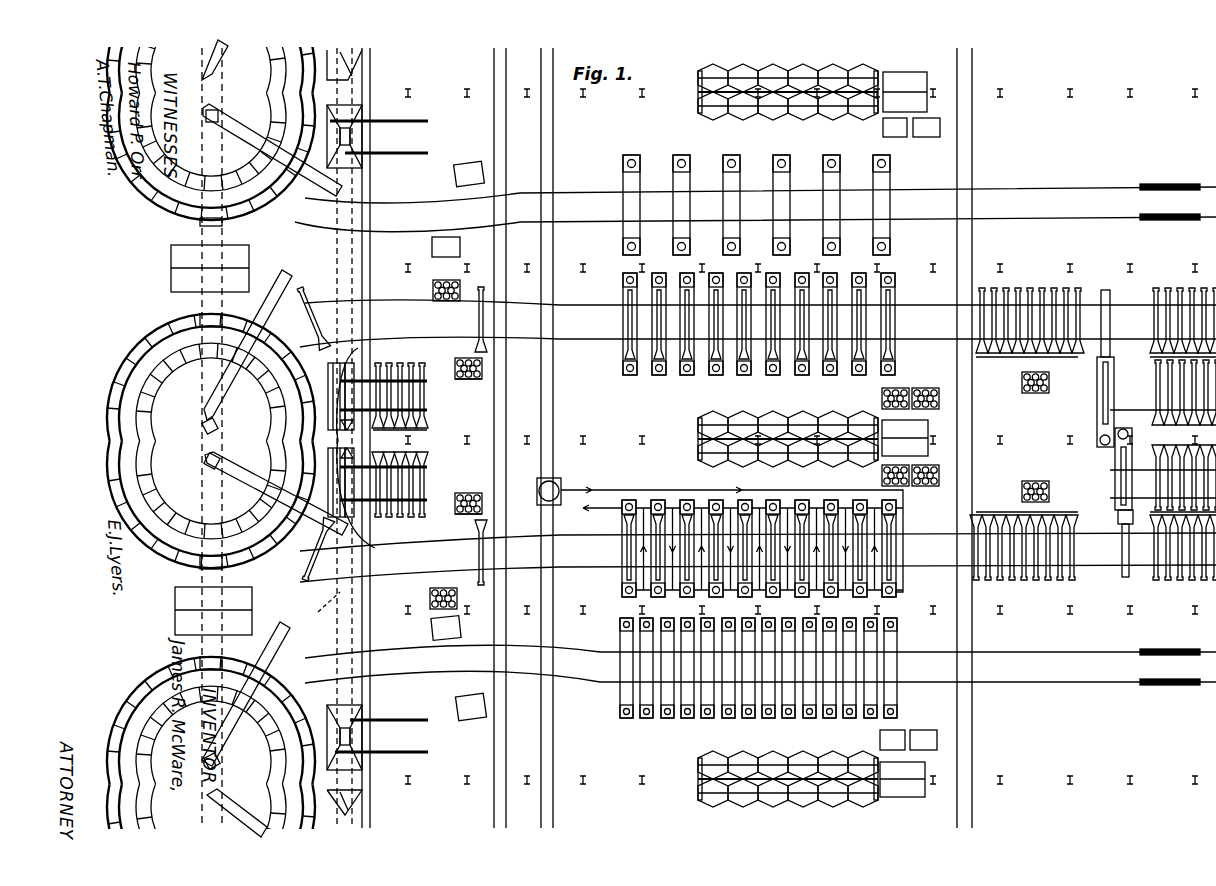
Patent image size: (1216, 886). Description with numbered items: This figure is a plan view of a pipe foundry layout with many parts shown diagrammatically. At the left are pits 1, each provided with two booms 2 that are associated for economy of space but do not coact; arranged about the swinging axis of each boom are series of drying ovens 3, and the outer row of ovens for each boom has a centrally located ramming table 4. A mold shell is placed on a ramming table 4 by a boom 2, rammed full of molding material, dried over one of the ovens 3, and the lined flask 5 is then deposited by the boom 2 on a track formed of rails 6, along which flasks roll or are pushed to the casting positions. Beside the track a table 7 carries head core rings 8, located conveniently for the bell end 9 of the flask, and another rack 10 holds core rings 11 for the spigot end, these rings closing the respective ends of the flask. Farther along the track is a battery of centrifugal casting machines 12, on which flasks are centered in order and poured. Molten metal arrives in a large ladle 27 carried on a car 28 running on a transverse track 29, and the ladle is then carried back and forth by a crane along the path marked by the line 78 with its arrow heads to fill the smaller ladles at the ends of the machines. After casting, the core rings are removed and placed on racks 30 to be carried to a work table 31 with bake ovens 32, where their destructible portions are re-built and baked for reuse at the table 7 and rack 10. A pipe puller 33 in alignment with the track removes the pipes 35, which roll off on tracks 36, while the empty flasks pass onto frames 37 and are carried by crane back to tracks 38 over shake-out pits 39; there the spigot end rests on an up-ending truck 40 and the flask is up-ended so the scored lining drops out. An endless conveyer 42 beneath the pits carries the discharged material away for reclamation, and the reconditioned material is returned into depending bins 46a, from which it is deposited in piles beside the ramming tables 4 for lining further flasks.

The pit 1 is at (282, 205).
The boom 2 is at (248, 110).
The drying oven 3 is at (282, 72).
The ramming table 4 is at (218, 218).
The flask 5 is at (300, 300).
The track rails 6 is at (578, 190).
The table 7 is at (466, 380).
The head core ring 8 is at (455, 364).
The bell end 9 is at (322, 346).
The rack 10 is at (438, 257).
The core ring 11 is at (456, 176).
The centrifugal casting machine 12 is at (778, 160).
The large ladle 27 is at (562, 488).
The car 28 is at (558, 478).
The transverse track 29 is at (555, 406).
The rack 30 is at (1026, 392).
The work table 31 is at (890, 100).
The bake oven 32 is at (764, 66).
The pipe puller 33 is at (1097, 390).
The pipe 35 is at (1182, 456).
The track 36 is at (1132, 412).
The frame 37 is at (1112, 322).
The track 38 is at (428, 153).
The shake-out pit 39 is at (345, 68).
The up-ending truck 40 is at (362, 348).
The endless conveyer 42 is at (322, 604).
The depending bin 46a is at (240, 260).
The ladle path line 78 is at (700, 494).